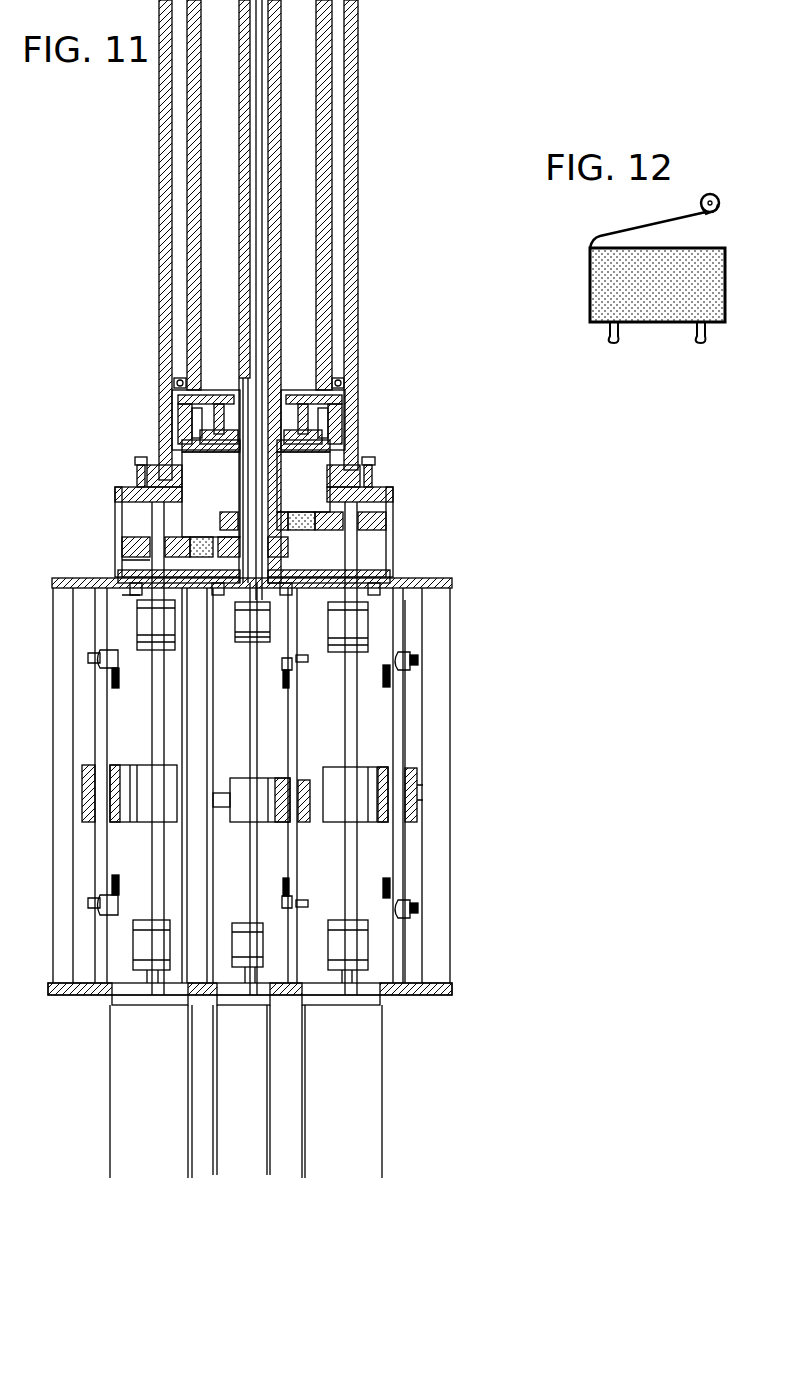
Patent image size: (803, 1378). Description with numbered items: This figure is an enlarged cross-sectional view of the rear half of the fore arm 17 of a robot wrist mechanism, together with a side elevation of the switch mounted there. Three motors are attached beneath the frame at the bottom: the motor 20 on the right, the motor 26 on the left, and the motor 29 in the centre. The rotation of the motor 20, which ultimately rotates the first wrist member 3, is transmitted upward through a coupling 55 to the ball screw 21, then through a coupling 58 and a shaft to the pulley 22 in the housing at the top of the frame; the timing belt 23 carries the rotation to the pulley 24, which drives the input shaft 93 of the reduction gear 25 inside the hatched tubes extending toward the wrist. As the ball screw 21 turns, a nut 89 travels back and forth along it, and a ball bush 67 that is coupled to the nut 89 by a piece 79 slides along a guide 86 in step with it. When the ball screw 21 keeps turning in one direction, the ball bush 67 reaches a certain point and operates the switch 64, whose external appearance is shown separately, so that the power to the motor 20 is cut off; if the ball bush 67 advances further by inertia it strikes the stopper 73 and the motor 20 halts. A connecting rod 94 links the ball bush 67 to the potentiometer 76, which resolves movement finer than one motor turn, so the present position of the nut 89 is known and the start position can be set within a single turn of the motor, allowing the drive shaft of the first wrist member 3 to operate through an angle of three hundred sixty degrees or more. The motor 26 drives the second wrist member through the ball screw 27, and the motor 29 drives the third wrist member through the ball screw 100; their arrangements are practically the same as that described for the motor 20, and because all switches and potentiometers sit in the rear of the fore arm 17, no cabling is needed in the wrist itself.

The fore arm 17 is at (159, 172).
The first wrist member 3 is at (187, 249).
The reduction gear 25 is at (218, 415).
The input shaft 93 is at (278, 400).
The pulley 24 is at (228, 514).
The timing belt 23 is at (302, 520).
The pulley 22 is at (372, 537).
The ball screw 27 is at (152, 868).
The ball screw 21 is at (352, 843).
The ball screw 100 is at (250, 888).
The potentiometer 76 is at (450, 737).
The guide rail 86 is at (405, 701).
The coupling 58 is at (362, 626).
The nut 89 is at (332, 816).
The piece 79 is at (375, 770).
The ball bush 67 is at (417, 806).
The connecting rod 94 is at (418, 779).
The stopper 73 is at (412, 664).
The switch 64 is at (383, 673).
The coupling 55 is at (364, 946).
The motor 26 is at (110, 1097).
The motor 29 is at (270, 1128).
The motor 20 is at (382, 1085).